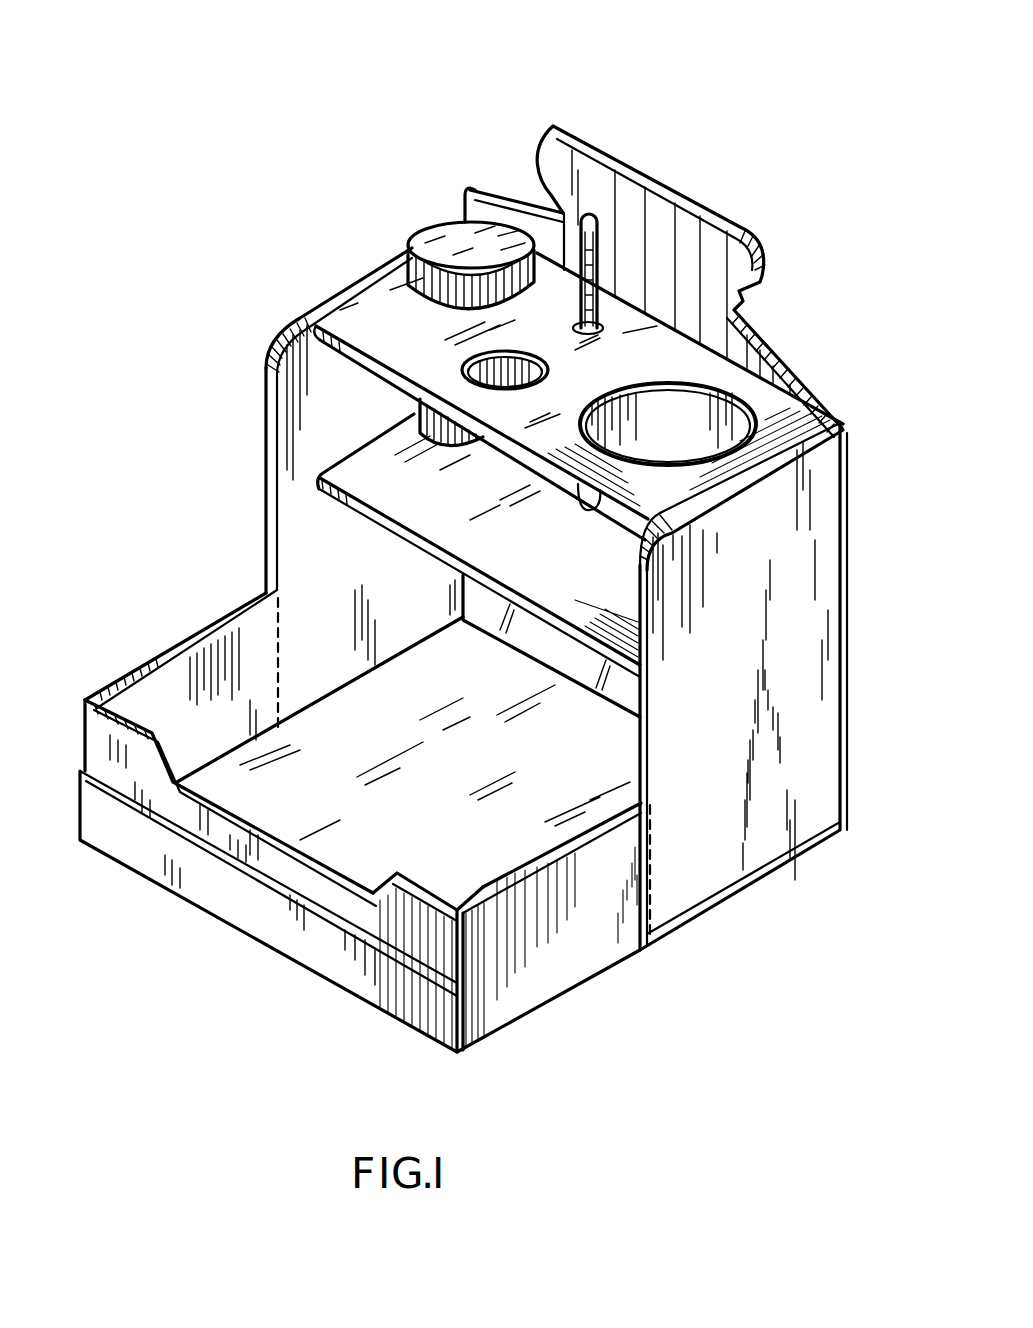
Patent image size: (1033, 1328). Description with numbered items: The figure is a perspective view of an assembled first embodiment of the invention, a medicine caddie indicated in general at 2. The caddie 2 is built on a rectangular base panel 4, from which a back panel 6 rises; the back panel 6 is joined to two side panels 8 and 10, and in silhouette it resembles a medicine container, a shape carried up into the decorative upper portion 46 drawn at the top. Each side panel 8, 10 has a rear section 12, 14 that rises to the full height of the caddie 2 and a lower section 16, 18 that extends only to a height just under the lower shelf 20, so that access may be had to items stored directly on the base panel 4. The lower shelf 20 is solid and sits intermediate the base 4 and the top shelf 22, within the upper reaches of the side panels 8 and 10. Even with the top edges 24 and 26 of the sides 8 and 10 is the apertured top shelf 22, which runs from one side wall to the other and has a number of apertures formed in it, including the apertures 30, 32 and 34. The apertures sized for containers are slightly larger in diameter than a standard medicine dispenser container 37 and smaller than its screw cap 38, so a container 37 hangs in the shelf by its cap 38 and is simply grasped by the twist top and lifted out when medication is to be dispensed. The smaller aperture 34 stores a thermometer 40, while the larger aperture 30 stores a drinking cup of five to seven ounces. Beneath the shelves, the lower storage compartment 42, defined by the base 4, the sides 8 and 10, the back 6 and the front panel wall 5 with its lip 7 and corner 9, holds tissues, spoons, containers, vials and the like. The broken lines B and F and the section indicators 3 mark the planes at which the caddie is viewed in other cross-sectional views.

The caddie 2 is at (343, 98).
The section line 3- 3 is at (137, 252).
The base panel 4 is at (270, 742).
The front panel wall 5 is at (100, 740).
The back panel 6 is at (540, 640).
The base 7 is at (100, 822).
The side panel 8 is at (307, 545).
The corner lip 9 is at (467, 892).
The side panel 10 is at (813, 667).
The rear section 12 is at (314, 364).
The rear section 14 is at (762, 504).
The lower section 16 is at (230, 637).
The lower section 18 is at (527, 990).
The lower shelf 20 is at (373, 455).
The top shelf 22 is at (377, 297).
The top edge 24 is at (310, 305).
The top edge 26 is at (717, 495).
The aperture 30 is at (655, 384).
The aperture 32 is at (463, 368).
The aperture 34 is at (573, 328).
The medicine dispenser container 37 is at (420, 407).
The screw cap 38 is at (452, 234).
The thermometer 40 is at (581, 302).
The lower storage compartment 42 is at (420, 791).
The back panel 46 is at (665, 188).
The section plane B is at (284, 667).
The section plane F is at (658, 884).